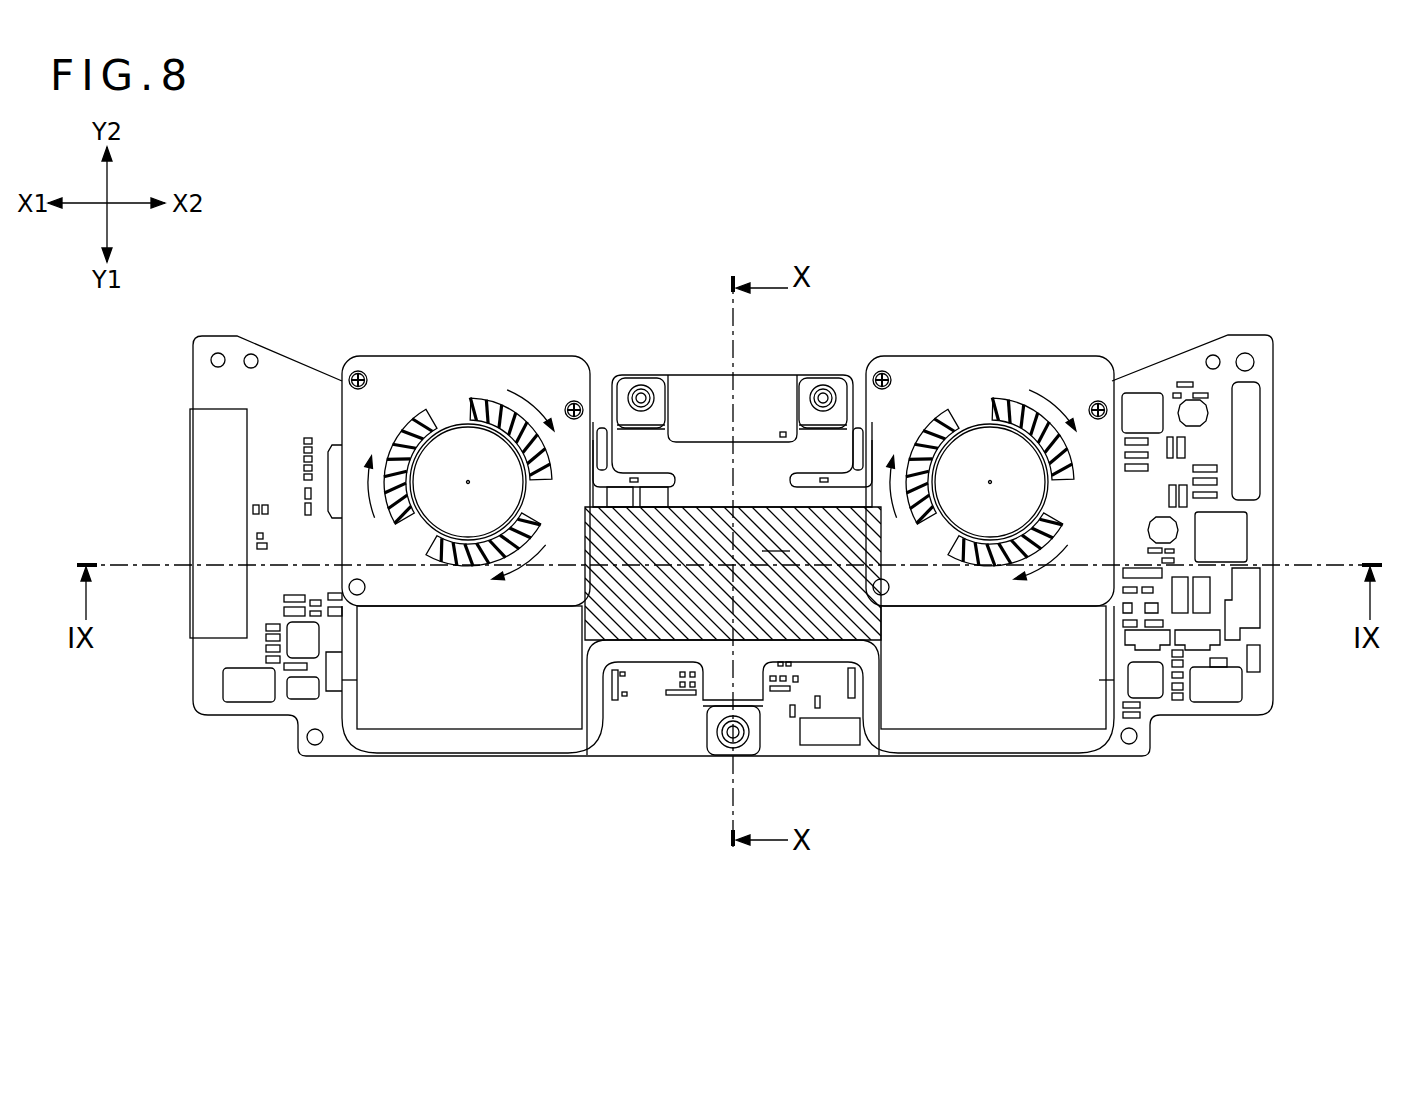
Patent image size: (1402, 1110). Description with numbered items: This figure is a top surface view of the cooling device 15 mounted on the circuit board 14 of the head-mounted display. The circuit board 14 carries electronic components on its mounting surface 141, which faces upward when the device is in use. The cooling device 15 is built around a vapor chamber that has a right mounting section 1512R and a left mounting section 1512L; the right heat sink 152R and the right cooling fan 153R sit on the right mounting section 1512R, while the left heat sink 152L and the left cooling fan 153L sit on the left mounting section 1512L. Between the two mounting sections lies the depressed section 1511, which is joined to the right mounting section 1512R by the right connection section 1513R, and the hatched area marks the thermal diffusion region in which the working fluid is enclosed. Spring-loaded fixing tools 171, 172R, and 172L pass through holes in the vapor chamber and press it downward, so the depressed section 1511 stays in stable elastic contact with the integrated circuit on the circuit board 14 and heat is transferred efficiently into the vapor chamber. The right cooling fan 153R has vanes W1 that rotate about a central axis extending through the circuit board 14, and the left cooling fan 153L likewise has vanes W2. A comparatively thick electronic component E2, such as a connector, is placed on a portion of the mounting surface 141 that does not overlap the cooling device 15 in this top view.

The circuit board 14 is at (789, 512).
The mounting surface 141 is at (1178, 372).
The cooling device 15 is at (733, 550).
The right cooling fan 153R is at (466, 438).
The left cooling fan 153L is at (990, 415).
The right heat sink 152R is at (445, 708).
The left heat sink 152L is at (1010, 708).
The right mounting section 1512R is at (512, 740).
The left mounting section 1512L is at (1077, 740).
The depressed section 1511 is at (690, 610).
The right connection section 1513R is at (627, 617).
The fixing tool 171 is at (710, 757).
The fixing tool 172R is at (638, 376).
The fixing tool 172L is at (828, 377).
The vanes W1 is at (424, 415).
The vanes W2 is at (948, 415).
The electronic component E2 is at (1247, 605).